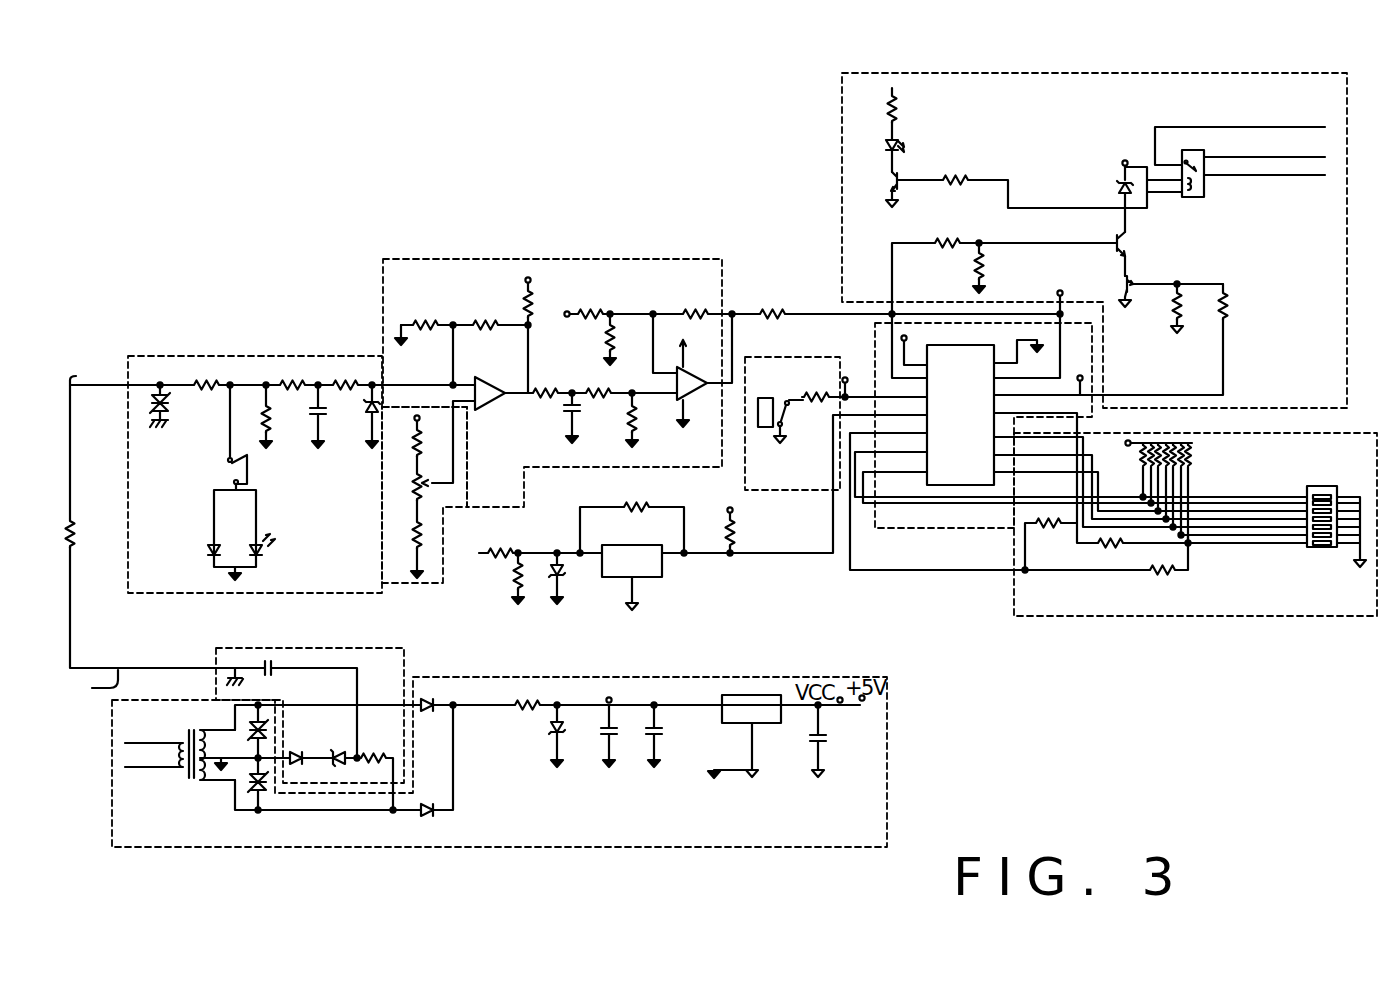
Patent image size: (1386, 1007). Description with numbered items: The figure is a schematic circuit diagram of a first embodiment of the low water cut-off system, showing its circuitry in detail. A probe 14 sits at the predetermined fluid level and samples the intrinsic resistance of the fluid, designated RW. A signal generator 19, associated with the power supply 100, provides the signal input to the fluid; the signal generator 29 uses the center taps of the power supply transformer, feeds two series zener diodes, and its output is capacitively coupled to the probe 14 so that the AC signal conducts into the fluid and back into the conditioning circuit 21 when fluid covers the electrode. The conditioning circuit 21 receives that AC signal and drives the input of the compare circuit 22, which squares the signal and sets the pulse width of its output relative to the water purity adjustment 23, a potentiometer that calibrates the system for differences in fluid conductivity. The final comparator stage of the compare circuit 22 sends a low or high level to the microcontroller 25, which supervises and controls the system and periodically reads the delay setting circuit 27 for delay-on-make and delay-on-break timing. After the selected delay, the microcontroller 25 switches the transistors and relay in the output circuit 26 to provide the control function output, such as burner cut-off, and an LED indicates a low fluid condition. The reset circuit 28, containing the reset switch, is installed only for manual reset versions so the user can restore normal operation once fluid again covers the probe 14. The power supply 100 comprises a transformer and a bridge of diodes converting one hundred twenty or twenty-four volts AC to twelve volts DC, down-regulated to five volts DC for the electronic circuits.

The probe 14 is at (90, 373).
The signal generator 19 is at (90, 683).
The conditioning circuit 21 is at (190, 356).
The compare circuit 22 is at (556, 259).
The water purity adjustment 23 is at (413, 585).
The microcontroller 25 is at (940, 528).
The output circuit 26 is at (842, 188).
The delay setting circuit 27 is at (1107, 616).
The reset circuit 28 is at (816, 357).
The signal generator block 29 is at (333, 648).
The power supply 100 is at (700, 675).